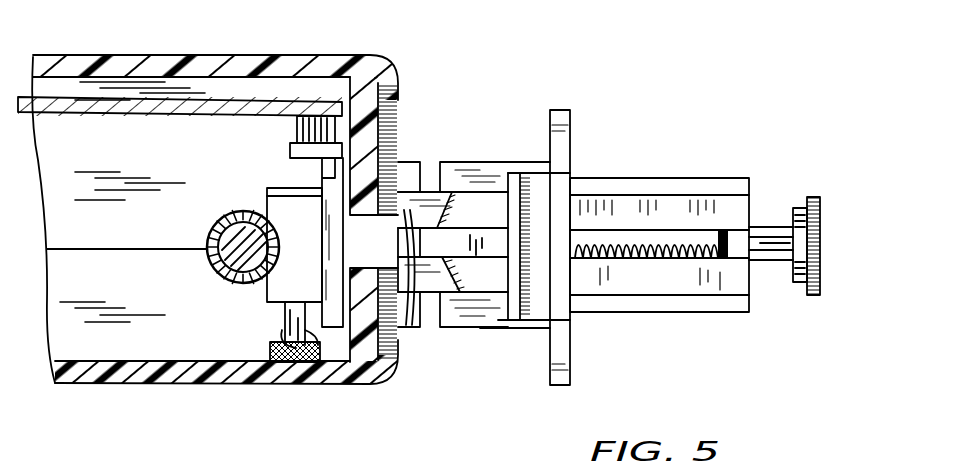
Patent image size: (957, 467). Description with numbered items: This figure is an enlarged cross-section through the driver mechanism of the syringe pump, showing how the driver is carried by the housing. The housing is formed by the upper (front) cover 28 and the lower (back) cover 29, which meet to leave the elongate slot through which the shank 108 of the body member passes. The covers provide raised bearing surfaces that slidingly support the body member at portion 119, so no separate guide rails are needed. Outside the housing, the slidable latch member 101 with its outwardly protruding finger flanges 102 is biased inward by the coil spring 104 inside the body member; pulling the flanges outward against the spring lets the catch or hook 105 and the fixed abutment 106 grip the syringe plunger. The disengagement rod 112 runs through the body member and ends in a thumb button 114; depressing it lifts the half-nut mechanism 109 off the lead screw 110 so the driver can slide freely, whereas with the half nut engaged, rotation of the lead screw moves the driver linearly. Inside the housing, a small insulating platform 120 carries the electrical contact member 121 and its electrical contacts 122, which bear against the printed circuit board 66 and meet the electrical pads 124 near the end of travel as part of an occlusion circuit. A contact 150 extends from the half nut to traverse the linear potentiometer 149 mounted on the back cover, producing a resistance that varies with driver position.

The lower (back) cover 29 is at (217, 63).
The upper (front) cover 28 is at (148, 385).
The printed circuit board 66 is at (122, 113).
The electrical contacts 122 is at (297, 127).
The platform 120 is at (290, 153).
The half-nut mechanism 109 is at (268, 287).
The lead screw 110 is at (223, 251).
The electrical pads 124 is at (362, 112).
The electrical contact member 121 is at (366, 153).
The portion of body member 119 is at (393, 170).
The latch member 101 is at (505, 165).
The finger flanges 102 is at (565, 118).
The coil spring 104 is at (632, 227).
The disengagement rod 112 is at (772, 227).
The thumb button 114 is at (815, 196).
The shank 108 is at (410, 325).
The abutment 106 is at (470, 290).
The catch or hook 105 is at (505, 280).
The contact 150 is at (262, 362).
The linear potentiometer 149 is at (285, 363).